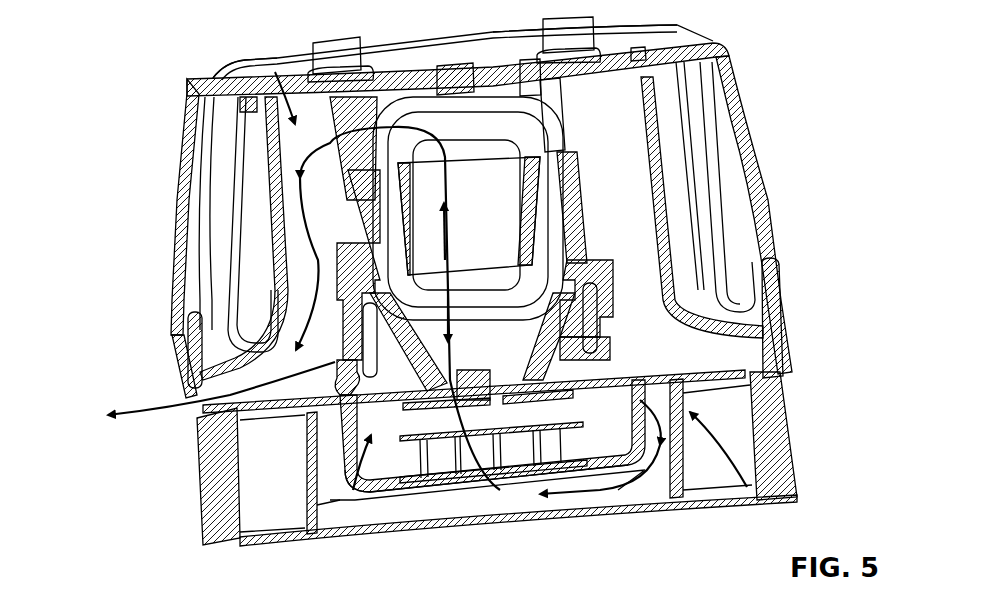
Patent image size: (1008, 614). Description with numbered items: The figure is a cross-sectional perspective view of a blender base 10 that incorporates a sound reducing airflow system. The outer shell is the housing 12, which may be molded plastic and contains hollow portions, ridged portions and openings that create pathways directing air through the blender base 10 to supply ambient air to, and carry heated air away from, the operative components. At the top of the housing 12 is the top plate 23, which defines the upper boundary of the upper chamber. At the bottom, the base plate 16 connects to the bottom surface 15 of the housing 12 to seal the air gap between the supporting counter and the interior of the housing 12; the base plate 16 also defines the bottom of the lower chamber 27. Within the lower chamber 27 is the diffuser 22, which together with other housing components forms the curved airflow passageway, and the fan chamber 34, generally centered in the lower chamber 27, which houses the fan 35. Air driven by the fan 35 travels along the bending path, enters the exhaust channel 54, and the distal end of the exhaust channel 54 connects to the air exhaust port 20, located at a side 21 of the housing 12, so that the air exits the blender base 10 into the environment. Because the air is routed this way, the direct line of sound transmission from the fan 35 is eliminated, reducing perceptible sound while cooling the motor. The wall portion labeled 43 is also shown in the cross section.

The blender base 10 is at (170, 46).
The housing 12 is at (772, 72).
The bottom surface 15 is at (577, 503).
The base plate 16 is at (680, 500).
The air exhaust port 20 is at (185, 420).
The side 21 is at (190, 487).
The diffuser 22 is at (305, 513).
The top plate 23 is at (513, 62).
The lower chamber 27 is at (427, 505).
The fan chamber 34 is at (357, 490).
The fan 35 is at (443, 463).
The air inlet wall 43 is at (680, 397).
The exhaust channel 54 is at (270, 70).